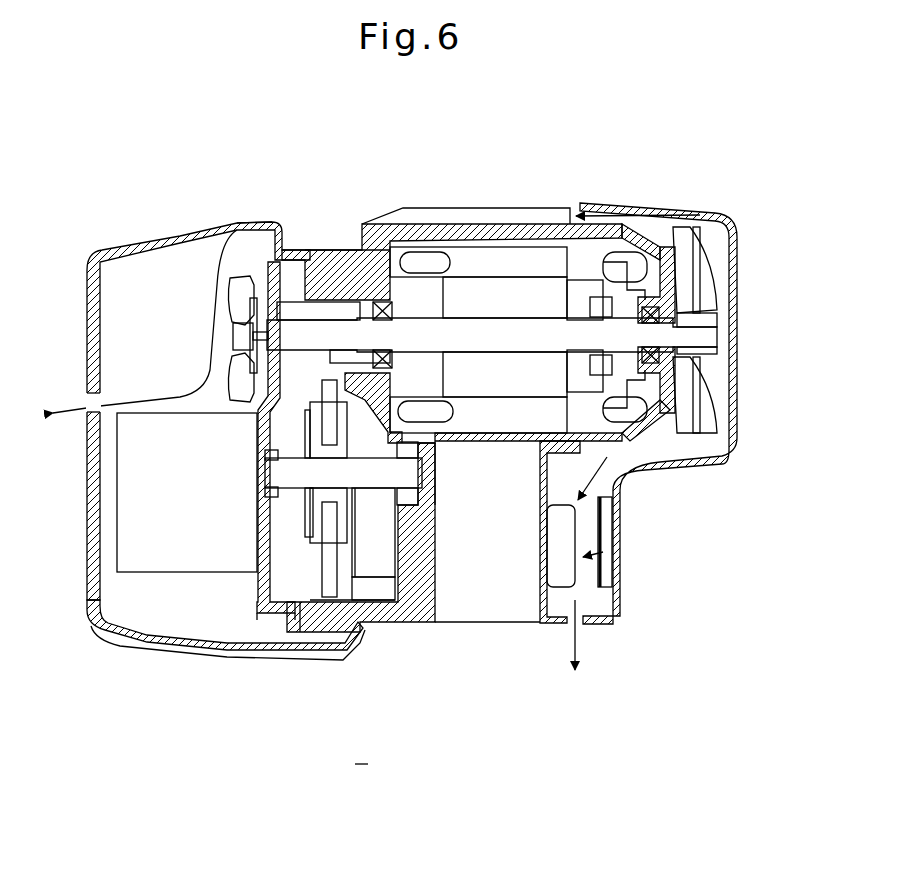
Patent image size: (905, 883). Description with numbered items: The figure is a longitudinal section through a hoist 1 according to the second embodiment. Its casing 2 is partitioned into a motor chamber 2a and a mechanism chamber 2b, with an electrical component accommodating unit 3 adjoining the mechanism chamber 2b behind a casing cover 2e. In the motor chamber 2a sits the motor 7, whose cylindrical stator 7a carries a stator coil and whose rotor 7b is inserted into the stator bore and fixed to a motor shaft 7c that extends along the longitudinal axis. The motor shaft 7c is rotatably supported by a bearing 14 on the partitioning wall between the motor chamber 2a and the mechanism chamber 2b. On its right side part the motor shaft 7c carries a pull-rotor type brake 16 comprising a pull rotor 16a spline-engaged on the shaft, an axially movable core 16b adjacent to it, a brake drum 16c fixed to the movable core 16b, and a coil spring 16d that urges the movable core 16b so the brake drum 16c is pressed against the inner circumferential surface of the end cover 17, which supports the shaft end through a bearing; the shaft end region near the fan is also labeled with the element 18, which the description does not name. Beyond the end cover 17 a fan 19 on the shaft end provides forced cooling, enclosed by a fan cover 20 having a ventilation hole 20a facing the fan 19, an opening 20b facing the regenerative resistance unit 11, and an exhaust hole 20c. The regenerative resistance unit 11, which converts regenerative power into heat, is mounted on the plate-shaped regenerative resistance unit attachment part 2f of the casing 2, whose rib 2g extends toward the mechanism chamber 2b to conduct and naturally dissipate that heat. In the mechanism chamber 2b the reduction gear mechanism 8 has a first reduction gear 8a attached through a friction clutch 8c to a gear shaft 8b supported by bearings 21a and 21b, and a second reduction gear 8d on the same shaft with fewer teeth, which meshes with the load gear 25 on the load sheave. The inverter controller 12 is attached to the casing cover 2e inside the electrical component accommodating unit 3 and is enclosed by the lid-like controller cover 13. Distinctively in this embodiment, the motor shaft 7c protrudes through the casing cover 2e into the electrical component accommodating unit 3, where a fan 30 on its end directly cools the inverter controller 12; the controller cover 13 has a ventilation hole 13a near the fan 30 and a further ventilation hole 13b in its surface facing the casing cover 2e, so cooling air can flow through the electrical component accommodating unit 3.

The hoist 1 is at (361, 753).
The casing 2 is at (362, 230).
The motor chamber 2a is at (390, 262).
The mechanism chamber 2b is at (355, 615).
The casing cover 2e is at (258, 612).
The regenerative resistance unit attachment part 2f is at (533, 563).
The rib 2g is at (493, 600).
The electrical component accommodating unit 3 is at (194, 229).
The motor 7 is at (492, 294).
The stator 7a is at (523, 250).
The rotor 7b is at (493, 293).
The motor shaft 7c is at (467, 330).
The reduction gear mechanism 8 is at (238, 456).
The first reduction gear 8a is at (330, 380).
The gear shaft 8b is at (303, 473).
The friction clutch 8c is at (345, 545).
The second reduction gear 8d is at (375, 540).
The regenerative resistance unit 11 is at (557, 573).
The inverter controller 12 is at (172, 557).
The controller cover 13 is at (90, 283).
The ventilation hole 13a is at (242, 290).
The ventilation hole 13b is at (95, 395).
The bearing 14 is at (380, 305).
The brake 16 is at (690, 300).
The pull rotor 16a is at (573, 290).
The movable core 16b is at (610, 287).
The brake drum 16c is at (672, 232).
The coil spring 16d is at (670, 377).
The end cover 17 is at (662, 270).
The fan hub 18 is at (677, 352).
The fan 19 is at (707, 410).
The fan cover 20 is at (733, 317).
The ventilation hole 20a is at (737, 250).
The opening 20b is at (605, 508).
The exhaust hole 20c is at (583, 623).
The bearing 21a is at (260, 503).
The bearing 21b is at (420, 555).
The load gear 25 is at (407, 507).
The fan 30 is at (244, 325).